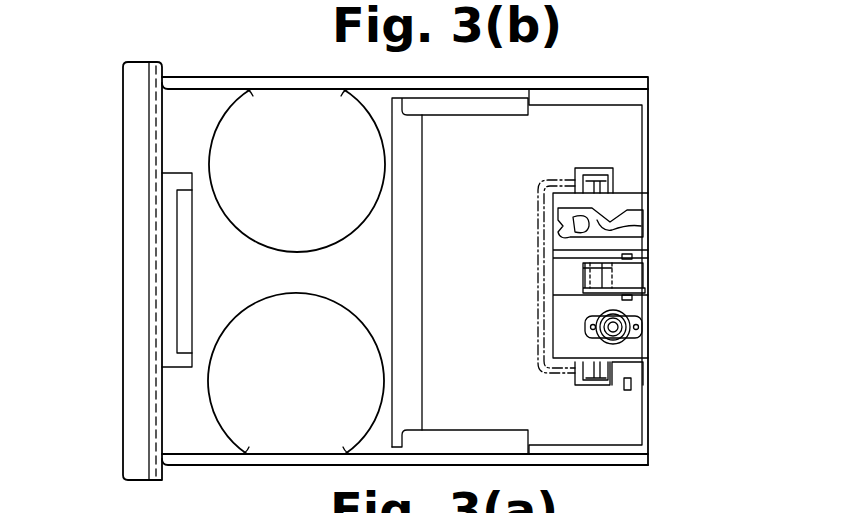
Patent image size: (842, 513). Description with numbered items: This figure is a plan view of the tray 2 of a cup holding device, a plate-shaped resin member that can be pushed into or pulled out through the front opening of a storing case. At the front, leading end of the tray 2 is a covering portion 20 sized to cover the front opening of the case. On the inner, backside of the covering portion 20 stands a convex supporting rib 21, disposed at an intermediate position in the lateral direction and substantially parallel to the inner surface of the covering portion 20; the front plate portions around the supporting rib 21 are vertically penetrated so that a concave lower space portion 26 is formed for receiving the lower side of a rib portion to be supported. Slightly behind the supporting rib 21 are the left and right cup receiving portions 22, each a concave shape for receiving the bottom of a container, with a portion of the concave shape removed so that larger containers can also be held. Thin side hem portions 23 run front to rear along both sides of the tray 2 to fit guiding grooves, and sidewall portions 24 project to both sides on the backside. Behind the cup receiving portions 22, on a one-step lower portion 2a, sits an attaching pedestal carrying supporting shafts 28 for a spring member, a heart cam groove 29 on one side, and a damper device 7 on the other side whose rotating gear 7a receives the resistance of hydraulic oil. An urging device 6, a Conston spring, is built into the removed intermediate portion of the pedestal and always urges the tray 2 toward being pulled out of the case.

The tray 2 is at (108, 58).
The one-step lower portion 2a is at (500, 289).
The covering portion 20 is at (138, 67).
The supporting rib 21 is at (183, 265).
The cup receiving portion 22 is at (290, 118).
The side hem portion 23 is at (620, 88).
The sidewall portion 24 is at (610, 97).
The lower space portion 26 is at (170, 215).
The supporting shaft 28 is at (603, 172).
The heart cam groove 29 is at (641, 234).
The urging device 6 is at (633, 272).
The damper device 7 is at (630, 318).
The rotating gear 7a is at (618, 340).